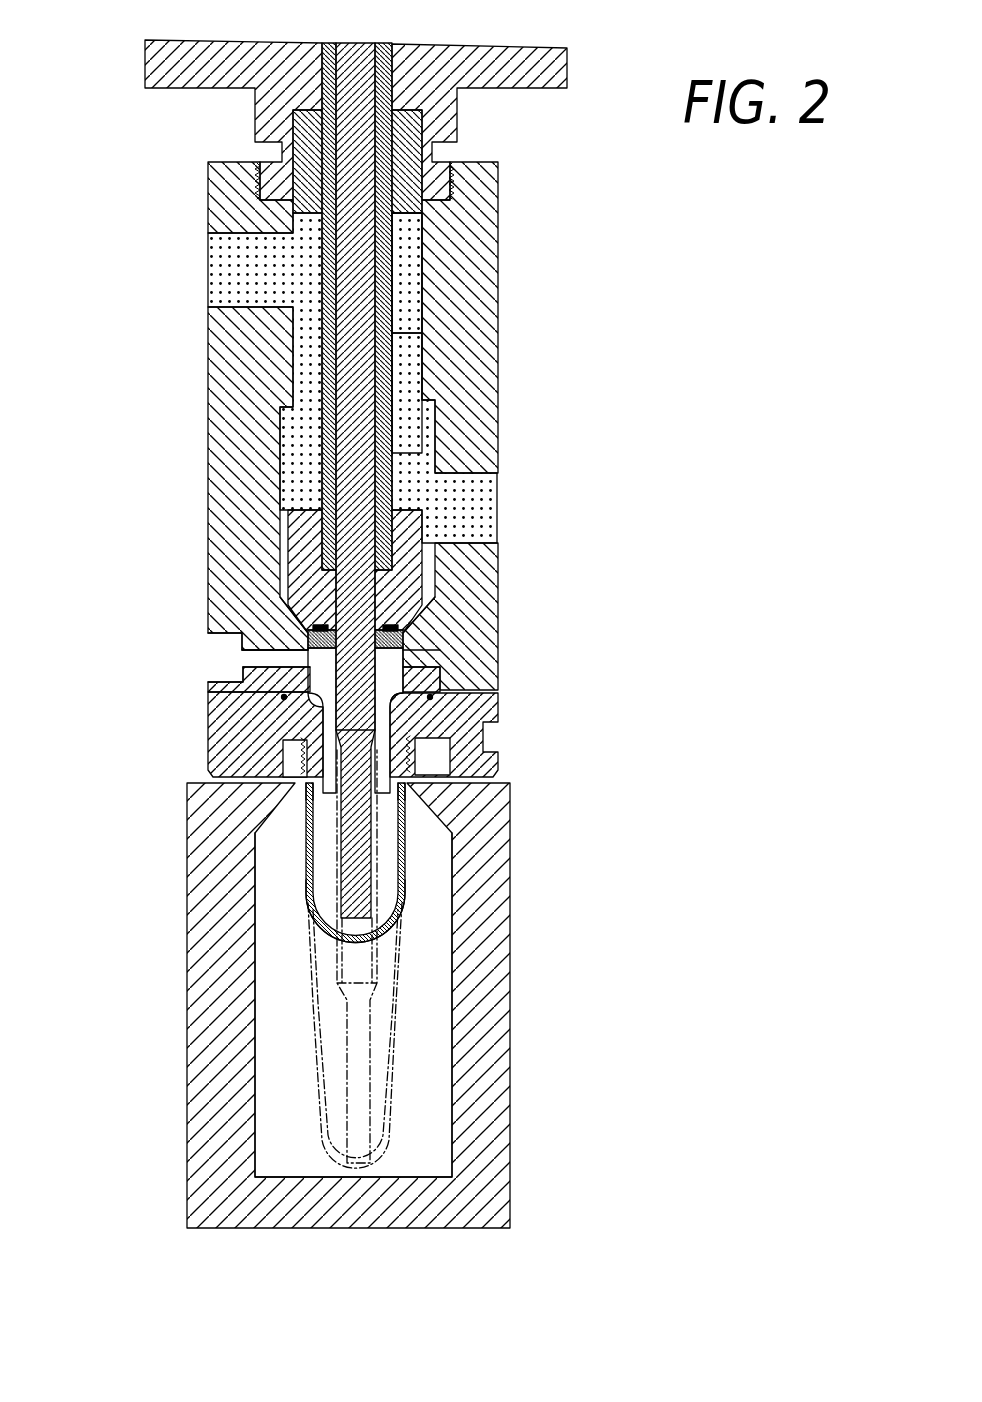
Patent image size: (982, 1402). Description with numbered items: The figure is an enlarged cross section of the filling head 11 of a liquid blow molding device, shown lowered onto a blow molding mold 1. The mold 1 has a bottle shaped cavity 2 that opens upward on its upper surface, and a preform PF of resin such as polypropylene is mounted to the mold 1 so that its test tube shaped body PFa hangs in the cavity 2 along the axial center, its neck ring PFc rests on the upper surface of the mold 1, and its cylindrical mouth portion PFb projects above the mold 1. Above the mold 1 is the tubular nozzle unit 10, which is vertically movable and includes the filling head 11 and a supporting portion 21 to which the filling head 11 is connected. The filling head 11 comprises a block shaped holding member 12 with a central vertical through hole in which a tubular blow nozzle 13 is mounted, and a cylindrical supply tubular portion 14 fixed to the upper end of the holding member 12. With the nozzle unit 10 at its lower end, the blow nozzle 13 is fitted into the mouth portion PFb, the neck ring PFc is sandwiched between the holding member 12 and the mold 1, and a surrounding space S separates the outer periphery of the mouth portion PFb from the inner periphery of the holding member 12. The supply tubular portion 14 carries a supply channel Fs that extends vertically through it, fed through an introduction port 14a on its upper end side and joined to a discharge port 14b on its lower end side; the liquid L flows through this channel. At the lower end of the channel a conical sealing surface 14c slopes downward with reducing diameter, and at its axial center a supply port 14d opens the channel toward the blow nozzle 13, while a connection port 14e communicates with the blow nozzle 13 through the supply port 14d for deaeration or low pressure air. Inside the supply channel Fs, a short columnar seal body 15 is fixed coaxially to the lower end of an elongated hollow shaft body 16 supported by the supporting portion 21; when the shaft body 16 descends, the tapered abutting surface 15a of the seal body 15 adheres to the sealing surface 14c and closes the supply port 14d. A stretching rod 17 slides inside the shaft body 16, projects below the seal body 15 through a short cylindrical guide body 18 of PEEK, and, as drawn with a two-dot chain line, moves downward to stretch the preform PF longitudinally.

The blow molding mold 1 is at (478, 1110).
The cavity 2 is at (452, 1092).
The nozzle unit 10 is at (130, 345).
The filling head 11 is at (499, 365).
The holding member 12 is at (216, 755).
The blow nozzle 13 is at (246, 684).
The supply tubular portion 14 is at (233, 507).
The introduction port 14a is at (220, 277).
The discharge port 14b is at (493, 502).
The sealing surface 14c is at (405, 615).
The supply port 14d is at (236, 606).
The connection port 14e is at (223, 672).
The seal body 15 is at (307, 557).
The abutting surface 15a is at (403, 640).
The shaft body 16 is at (327, 50).
The stretching rod 17 is at (350, 92).
The guide body 18 is at (337, 648).
The supporting portion 21 is at (133, 63).
The liquid L is at (403, 232).
The supply channel Fs is at (407, 388).
The surrounding space S is at (423, 760).
The preform PF is at (412, 878).
The body PFa is at (407, 848).
The mouth portion PFb is at (407, 787).
The neck ring PFc is at (305, 785).